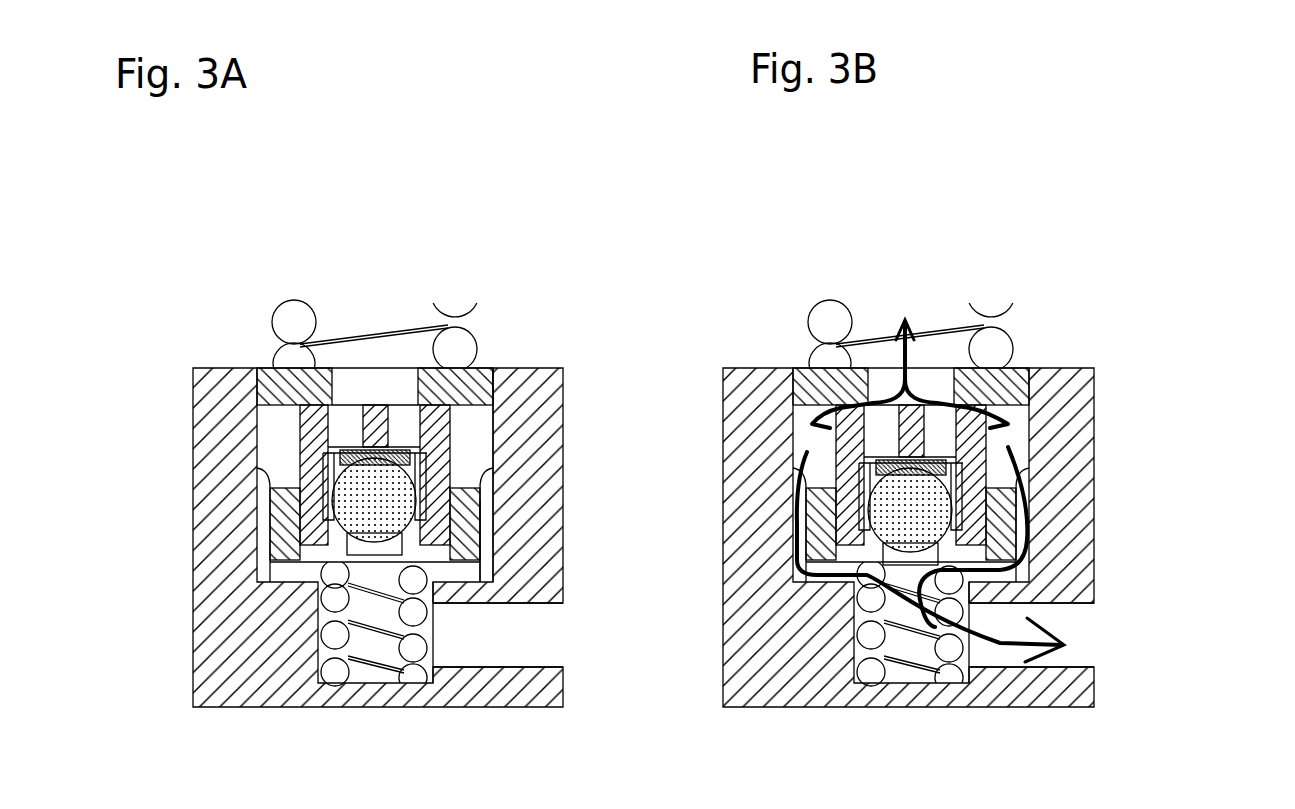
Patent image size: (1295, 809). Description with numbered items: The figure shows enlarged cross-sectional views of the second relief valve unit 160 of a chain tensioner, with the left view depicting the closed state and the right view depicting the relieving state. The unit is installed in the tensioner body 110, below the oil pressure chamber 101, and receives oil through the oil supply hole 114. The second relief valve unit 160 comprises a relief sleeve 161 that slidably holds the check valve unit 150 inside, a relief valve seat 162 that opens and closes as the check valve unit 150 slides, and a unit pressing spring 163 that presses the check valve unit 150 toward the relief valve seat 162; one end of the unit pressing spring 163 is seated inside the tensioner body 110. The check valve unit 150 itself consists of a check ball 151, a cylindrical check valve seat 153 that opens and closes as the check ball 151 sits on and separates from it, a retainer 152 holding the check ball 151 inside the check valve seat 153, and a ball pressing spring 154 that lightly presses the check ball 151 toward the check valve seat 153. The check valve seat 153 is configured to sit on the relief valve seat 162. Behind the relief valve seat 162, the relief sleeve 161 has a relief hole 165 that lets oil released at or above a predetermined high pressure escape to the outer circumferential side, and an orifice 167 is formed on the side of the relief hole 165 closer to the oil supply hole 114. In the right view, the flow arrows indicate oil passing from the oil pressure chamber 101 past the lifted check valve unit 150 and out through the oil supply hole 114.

In FIG. 3B, the oil pressure chamber 101 is at (940, 304).
In FIG. 3A, the tensioner body 110 is at (235, 656).
In FIG. 3A, the oil supply hole 114 is at (512, 640).
In FIG. 3B, the oil supply hole 114 is at (1085, 618).
In FIG. 3B, the check valve unit 150 is at (1018, 472).
In FIG. 3A, the check ball 151 is at (415, 458).
In FIG. 3A, the retainer 152 is at (472, 365).
In FIG. 3A, the check valve seat 153 is at (440, 527).
In FIG. 3A, the ball pressing spring 154 is at (495, 425).
In FIG. 3A, the second relief valve unit 160 is at (262, 362).
In FIG. 3B, the second relief valve unit 160 is at (805, 365).
In FIG. 3A, the relief sleeve 161 is at (268, 514).
In FIG. 3A, the relief valve seat 162 is at (253, 366).
In FIG. 3A, the unit pressing spring 163 is at (337, 637).
In FIG. 3B, the unit pressing spring 163 is at (862, 632).
In FIG. 3A, the relief hole 165 is at (265, 427).
In FIG. 3A, the orifice 167 is at (790, 527).